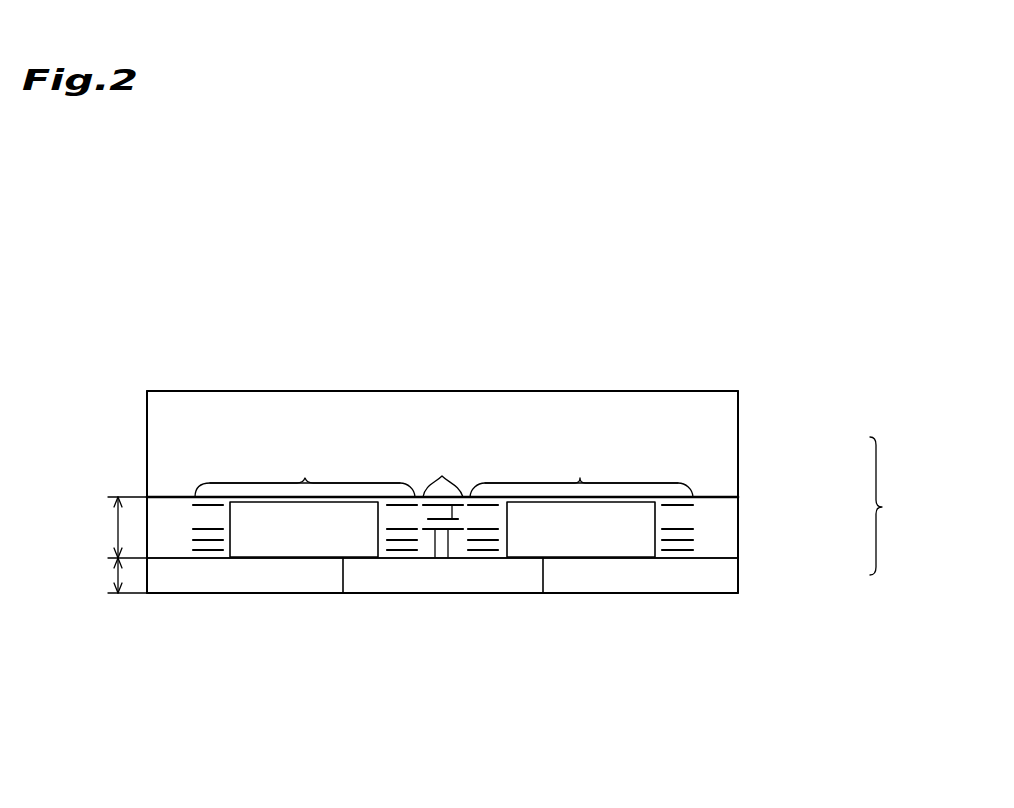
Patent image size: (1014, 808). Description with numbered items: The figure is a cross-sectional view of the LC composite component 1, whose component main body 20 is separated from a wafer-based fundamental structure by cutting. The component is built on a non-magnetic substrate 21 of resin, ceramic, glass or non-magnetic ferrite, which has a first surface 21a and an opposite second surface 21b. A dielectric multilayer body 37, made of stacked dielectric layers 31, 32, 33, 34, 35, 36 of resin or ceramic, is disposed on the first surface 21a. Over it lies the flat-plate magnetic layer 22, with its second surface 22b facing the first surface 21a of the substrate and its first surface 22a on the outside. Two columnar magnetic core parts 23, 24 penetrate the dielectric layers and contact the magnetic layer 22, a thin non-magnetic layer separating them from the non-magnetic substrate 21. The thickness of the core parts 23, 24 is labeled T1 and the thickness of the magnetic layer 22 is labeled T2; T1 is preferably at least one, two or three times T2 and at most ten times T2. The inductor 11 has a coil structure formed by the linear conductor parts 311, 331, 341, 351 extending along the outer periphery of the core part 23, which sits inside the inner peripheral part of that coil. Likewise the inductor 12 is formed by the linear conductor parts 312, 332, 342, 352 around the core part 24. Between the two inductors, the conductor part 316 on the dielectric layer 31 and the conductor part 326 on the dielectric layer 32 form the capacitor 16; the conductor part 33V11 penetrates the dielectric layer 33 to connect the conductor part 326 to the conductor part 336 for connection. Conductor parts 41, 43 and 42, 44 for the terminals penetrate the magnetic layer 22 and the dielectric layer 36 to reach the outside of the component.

The LC composite component 1 is at (438, 268).
The component main body 20 is at (150, 386).
The non-magnetic substrate 21 is at (738, 412).
The first surface of the non-magnetic substrate 21a is at (703, 497).
The second surface of the non-magnetic substrate 21b is at (738, 389).
The magnetic layer 22 is at (745, 593).
The first surface of the magnetic layer 22a is at (738, 594).
The second surface of the magnetic layer 22b is at (725, 556).
The core part 23 is at (300, 540).
The core part 24 is at (580, 540).
The inductor 11 is at (305, 480).
The inductor 12 is at (580, 480).
The capacitor 16 is at (447, 503).
The conductor part for the inductor 11 311 is at (202, 505).
The conductor part for the inductor 12 312 is at (668, 505).
The conductor part for the capacitor 16 316 is at (432, 503).
The conductor part for the capacitor 16 326 is at (458, 503).
The conductor part for the inductor 11 331 is at (217, 529).
The conductor part for the inductor 12 332 is at (685, 529).
The conductor part for connection 336 is at (435, 557).
The conductor part penetrating the dielectric layer 33 33V11 is at (448, 557).
The conductor part for the inductor 11 341 is at (202, 540).
The conductor part for the inductor 12 342 is at (668, 540).
The conductor part for the inductor 11 351 is at (217, 550).
The conductor part for the inductor 12 352 is at (686, 550).
The dielectric layer 31 is at (738, 503).
The dielectric layer 32 is at (738, 512).
The dielectric layer 33 is at (738, 523).
The dielectric layer 34 is at (738, 530).
The dielectric layer 35 is at (738, 540).
The dielectric layer 36 is at (738, 548).
The dielectric multilayer body 37 is at (886, 506).
The conductor part for the terminal 41 is at (352, 623).
The conductor part for the terminal 43 is at (345, 568).
The conductor part for the terminal 42 is at (540, 623).
The conductor part for the terminal 44 is at (543, 573).
The thickness of the core parts T1 is at (114, 527).
The thickness of the magnetic layer T2 is at (114, 575).